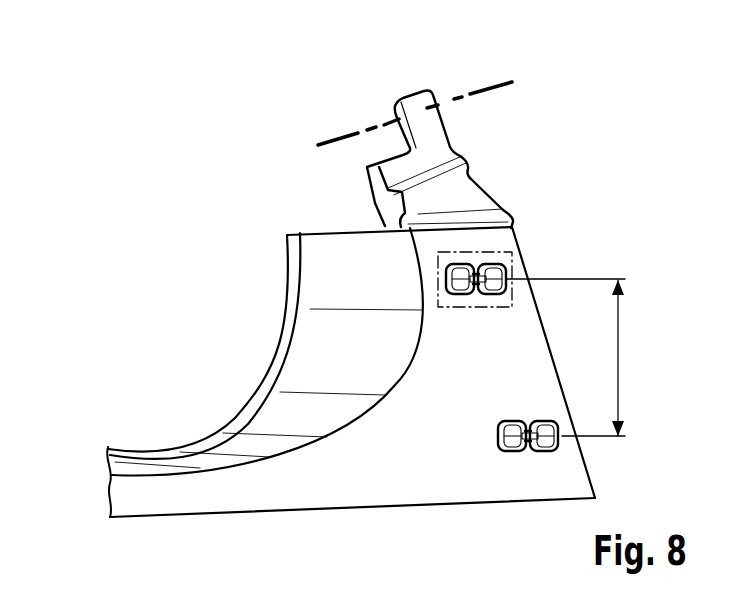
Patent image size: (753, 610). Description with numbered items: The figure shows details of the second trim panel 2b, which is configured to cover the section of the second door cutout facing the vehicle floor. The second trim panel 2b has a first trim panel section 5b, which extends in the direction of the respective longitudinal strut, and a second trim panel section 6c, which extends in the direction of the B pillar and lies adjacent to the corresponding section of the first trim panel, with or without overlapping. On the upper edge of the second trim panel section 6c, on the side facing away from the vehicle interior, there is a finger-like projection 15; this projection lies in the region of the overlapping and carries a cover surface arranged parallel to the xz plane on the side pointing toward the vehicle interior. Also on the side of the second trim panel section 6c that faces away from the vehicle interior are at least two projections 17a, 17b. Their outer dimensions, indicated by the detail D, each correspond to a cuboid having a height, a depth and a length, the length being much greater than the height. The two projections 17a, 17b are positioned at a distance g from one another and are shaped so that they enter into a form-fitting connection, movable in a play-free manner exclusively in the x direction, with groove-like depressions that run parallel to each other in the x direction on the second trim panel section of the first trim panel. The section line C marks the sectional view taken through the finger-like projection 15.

The second trim panel 2b is at (164, 309).
The first trim panel section 5b is at (118, 492).
The second trim panel section 6c is at (431, 473).
The finger-like projection 15 is at (428, 123).
The projection 17a is at (506, 272).
The projection 17b is at (563, 438).
The detail D is at (513, 292).
The distance g is at (618, 358).
The section line C- C is at (333, 115).